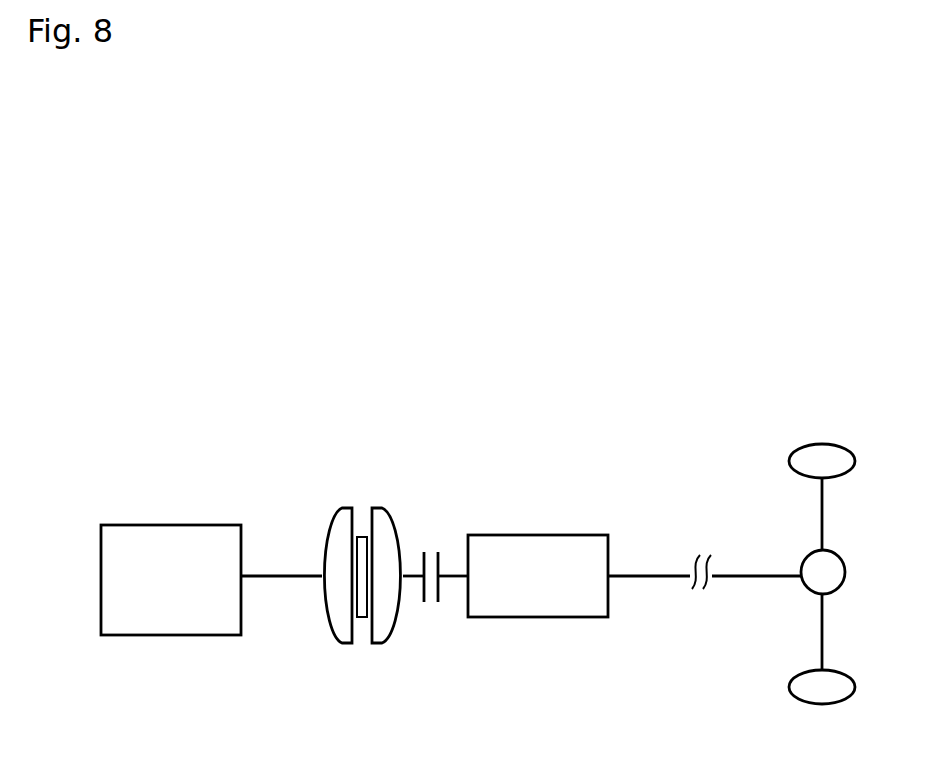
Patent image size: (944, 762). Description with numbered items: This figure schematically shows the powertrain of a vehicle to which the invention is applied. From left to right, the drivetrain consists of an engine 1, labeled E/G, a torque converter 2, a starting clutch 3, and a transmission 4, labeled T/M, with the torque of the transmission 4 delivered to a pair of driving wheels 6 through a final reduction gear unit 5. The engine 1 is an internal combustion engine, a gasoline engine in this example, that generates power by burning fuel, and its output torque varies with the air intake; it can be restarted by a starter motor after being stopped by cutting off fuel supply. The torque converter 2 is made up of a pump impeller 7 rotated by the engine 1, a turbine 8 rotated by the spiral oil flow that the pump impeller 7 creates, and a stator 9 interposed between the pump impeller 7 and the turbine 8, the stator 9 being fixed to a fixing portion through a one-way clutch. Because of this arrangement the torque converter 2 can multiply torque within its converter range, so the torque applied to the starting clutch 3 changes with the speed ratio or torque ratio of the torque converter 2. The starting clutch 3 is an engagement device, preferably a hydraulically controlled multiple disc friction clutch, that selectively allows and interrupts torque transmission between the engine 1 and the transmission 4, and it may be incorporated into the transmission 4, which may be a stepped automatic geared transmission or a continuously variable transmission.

The engine 1 is at (181, 525).
The torque converter 2 is at (380, 568).
The starting clutch 3 is at (429, 613).
The transmission 4 is at (546, 535).
The final reduction gear unit 5 is at (846, 572).
The driving wheels 6 is at (820, 444).
The pump impeller 7 is at (336, 636).
The turbine 8 is at (382, 640).
The stator 9 is at (360, 537).